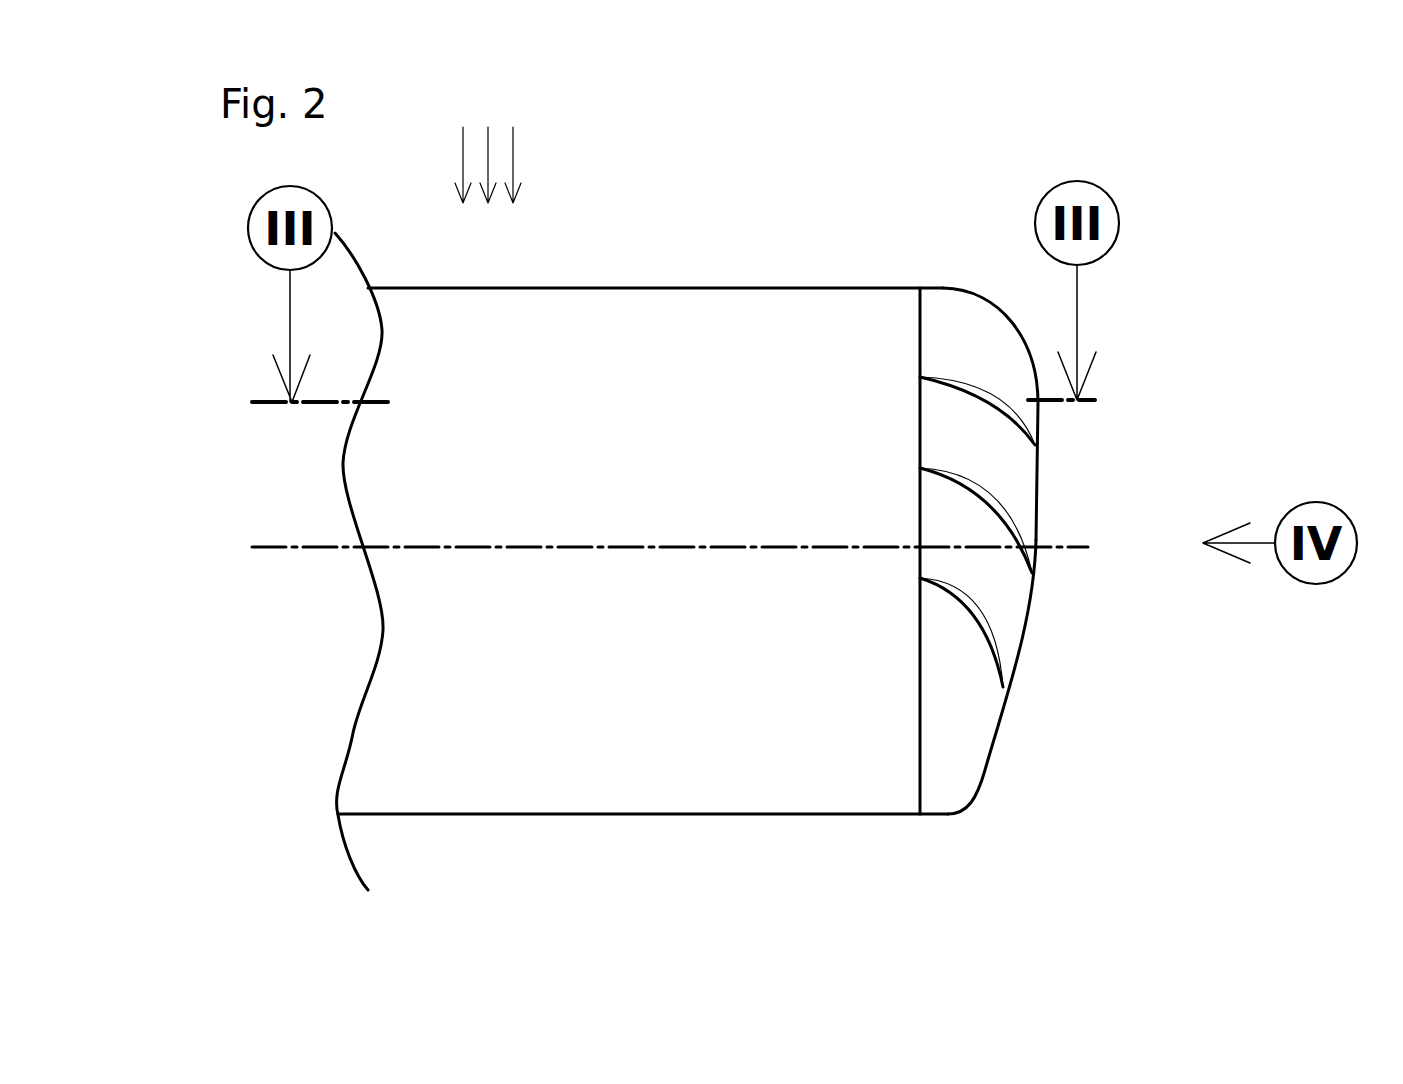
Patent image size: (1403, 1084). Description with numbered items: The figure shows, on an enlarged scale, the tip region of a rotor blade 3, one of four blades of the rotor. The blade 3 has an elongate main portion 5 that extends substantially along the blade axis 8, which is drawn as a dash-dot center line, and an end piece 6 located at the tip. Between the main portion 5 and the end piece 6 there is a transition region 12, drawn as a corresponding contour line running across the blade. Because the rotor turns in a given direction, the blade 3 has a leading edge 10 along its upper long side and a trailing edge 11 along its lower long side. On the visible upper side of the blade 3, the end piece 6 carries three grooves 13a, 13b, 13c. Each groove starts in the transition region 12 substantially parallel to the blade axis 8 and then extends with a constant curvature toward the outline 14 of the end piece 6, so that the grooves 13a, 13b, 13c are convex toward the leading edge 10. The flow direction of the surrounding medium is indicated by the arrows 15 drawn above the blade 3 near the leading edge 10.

The blade 3 is at (641, 568).
The main portion 5 is at (503, 313).
The end piece 6 is at (945, 312).
The blade axis 8 is at (555, 550).
The leading edge 10 is at (667, 287).
The trailing edge 11 is at (738, 815).
The transition region 12 is at (915, 502).
The groove 13a is at (1008, 408).
The groove 13b is at (1003, 508).
The groove 13c is at (1003, 660).
The outline 14 is at (995, 748).
The arrows 15 is at (488, 145).